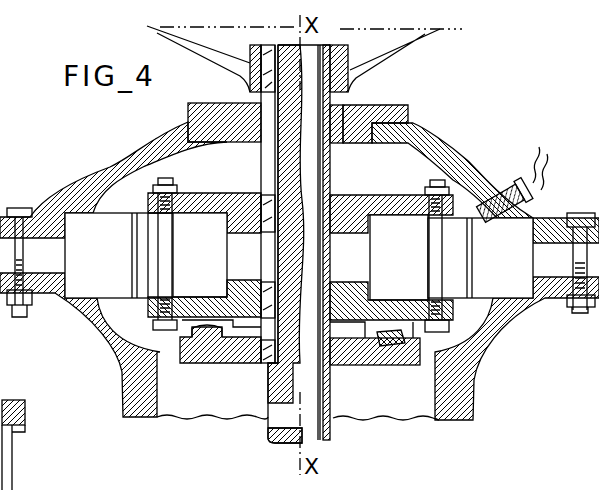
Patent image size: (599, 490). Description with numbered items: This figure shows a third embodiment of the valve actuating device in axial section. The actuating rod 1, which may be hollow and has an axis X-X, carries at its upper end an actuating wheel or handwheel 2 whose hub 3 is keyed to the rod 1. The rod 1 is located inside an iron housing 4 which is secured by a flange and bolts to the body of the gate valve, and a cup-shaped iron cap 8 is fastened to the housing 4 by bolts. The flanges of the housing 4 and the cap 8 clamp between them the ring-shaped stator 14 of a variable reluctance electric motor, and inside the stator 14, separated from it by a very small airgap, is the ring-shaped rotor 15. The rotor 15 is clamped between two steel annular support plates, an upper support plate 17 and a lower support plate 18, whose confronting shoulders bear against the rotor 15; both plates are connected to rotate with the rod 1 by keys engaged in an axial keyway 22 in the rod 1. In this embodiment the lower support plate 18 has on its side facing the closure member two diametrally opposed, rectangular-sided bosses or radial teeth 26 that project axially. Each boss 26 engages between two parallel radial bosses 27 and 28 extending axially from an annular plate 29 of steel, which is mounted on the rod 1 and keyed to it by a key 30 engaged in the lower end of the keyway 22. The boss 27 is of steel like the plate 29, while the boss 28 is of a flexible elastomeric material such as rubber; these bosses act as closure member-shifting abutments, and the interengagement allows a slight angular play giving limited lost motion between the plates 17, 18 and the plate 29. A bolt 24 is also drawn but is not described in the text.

The actuating rod 1 is at (332, 422).
The actuating wheel or handwheel 2 is at (410, 47).
The hub 3 is at (347, 78).
The housing 4 is at (470, 408).
The cup-shaped cap 8 is at (492, 185).
The stator 14 is at (117, 227).
The rotor 15 is at (143, 302).
The upper support plate 17 is at (366, 191).
The lower support plate 18 is at (452, 308).
The axial slot or keyway 22 is at (263, 182).
The bolt 24 is at (17, 415).
The bosses or radial teeth 26 is at (370, 332).
The radial boss 27 is at (202, 327).
The radial boss 28 is at (397, 345).
The annular plate 29 is at (202, 365).
The key 30 is at (266, 362).